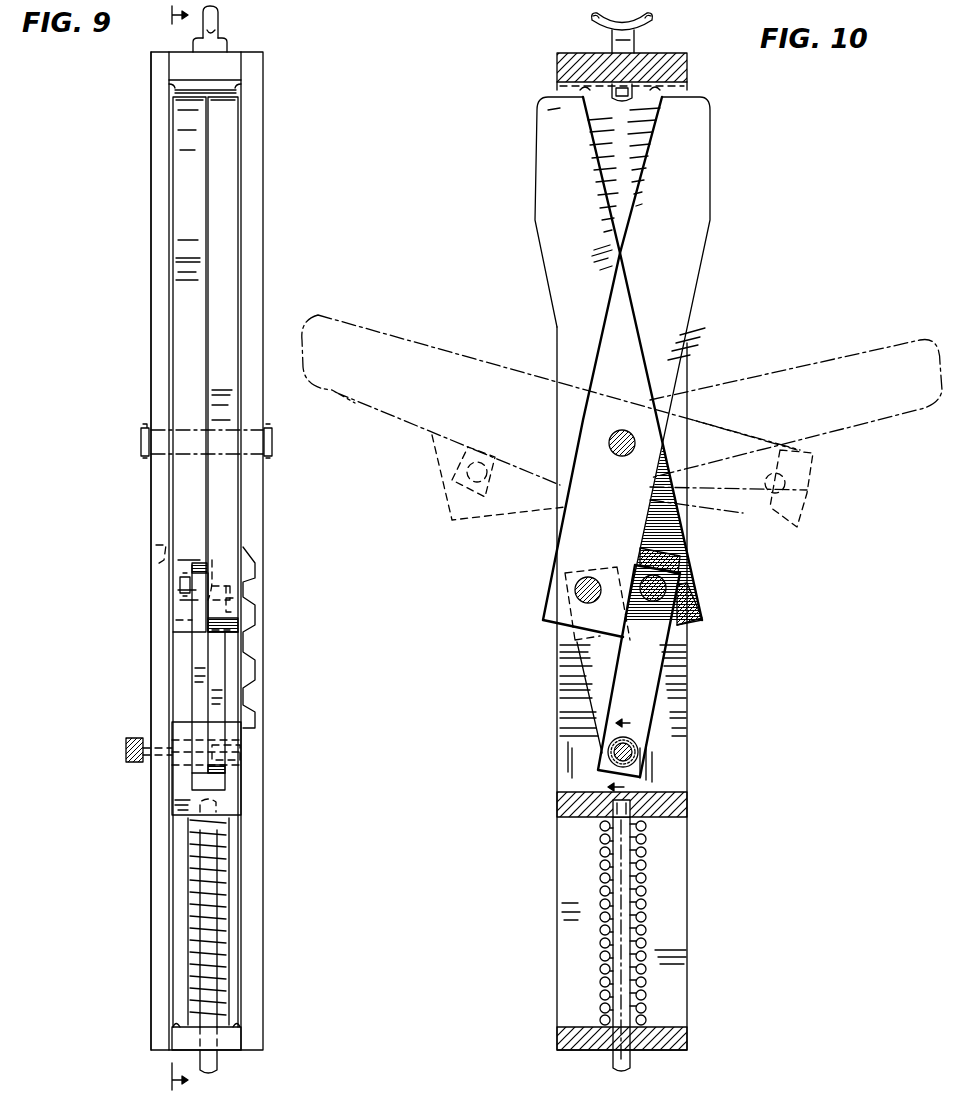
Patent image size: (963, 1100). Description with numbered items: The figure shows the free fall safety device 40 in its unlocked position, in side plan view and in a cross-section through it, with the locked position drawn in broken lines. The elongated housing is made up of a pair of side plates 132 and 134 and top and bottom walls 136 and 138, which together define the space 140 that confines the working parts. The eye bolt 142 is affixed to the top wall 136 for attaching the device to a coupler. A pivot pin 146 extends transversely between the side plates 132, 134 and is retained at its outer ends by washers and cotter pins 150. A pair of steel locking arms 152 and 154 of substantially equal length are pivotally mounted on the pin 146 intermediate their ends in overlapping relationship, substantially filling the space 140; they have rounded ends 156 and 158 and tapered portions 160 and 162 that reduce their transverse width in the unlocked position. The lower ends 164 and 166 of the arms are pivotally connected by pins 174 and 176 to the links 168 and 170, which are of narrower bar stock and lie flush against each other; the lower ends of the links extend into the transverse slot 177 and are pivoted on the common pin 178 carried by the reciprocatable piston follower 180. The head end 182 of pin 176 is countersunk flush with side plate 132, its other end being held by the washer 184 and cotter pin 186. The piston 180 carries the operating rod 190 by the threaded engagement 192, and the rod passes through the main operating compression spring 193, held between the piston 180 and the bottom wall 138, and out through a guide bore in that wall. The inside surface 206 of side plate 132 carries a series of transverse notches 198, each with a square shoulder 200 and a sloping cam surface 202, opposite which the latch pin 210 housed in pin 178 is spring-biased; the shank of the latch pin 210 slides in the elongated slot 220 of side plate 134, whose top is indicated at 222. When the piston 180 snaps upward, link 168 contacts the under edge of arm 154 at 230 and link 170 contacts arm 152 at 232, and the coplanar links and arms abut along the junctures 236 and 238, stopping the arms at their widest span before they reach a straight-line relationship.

In FIG. 9, the safety device 40 is at (265, 928).
In FIG. 9, the side plate 132 is at (255, 182).
In FIG. 10, the side plate 132 is at (690, 90).
In FIG. 9, the side plate 134 is at (160, 213).
In FIG. 9, the top wall 136 is at (180, 68).
In FIG. 10, the top wall 136 is at (680, 74).
In FIG. 9, the bottom wall 138 is at (238, 1045).
In FIG. 10, the bottom wall 138 is at (680, 1045).
In FIG. 9, the space 140 is at (232, 90).
In FIG. 9, the eye bolt 142 is at (220, 24).
In FIG. 10, the eye bolt 142 is at (650, 30).
In FIG. 9, the pivot pin 146 is at (268, 432).
In FIG. 10, the pivot pin 146 is at (624, 430).
In FIG. 9, the cotter pin 150 is at (147, 432).
In FIG. 9, the locking arm 152 is at (183, 262).
In FIG. 10, the locking arm 152 is at (700, 262).
In FIG. 9, the locking arm 154 is at (228, 246).
In FIG. 10, the locking arm 154 is at (550, 278).
In FIG. 10, the rounded end 156 is at (700, 103).
In FIG. 10, the rounded end 158 is at (558, 97).
In FIG. 10, the tapered portion 160 is at (710, 165).
In FIG. 10, the tapered portion 162 is at (537, 155).
In FIG. 10, the lower end 164 is at (558, 548).
In FIG. 10, the lower end 166 is at (690, 565).
In FIG. 9, the link 168 is at (222, 690).
In FIG. 10, the link 168 is at (582, 672).
In FIG. 9, the link 170 is at (193, 672).
In FIG. 10, the link 170 is at (798, 512).
In FIG. 10, the pin 174 is at (575, 596).
In FIG. 9, the pin 176 is at (215, 570).
In FIG. 10, the pin 176 is at (700, 592).
In FIG. 10, the transverse slot 177 is at (680, 745).
In FIG. 10, the pin 178 is at (665, 540).
In FIG. 9, the piston follower 180 is at (228, 797).
In FIG. 10, the piston follower 180 is at (656, 802).
In FIG. 9, the enlarged head end 182 is at (248, 590).
In FIG. 9, the washer 184 is at (192, 565).
In FIG. 9, the cotter pin 186 is at (184, 578).
In FIG. 9, the operating rod 190 is at (217, 1062).
In FIG. 10, the operating rod 190 is at (630, 1062).
In FIG. 10, the threaded engagement 192 is at (630, 818).
In FIG. 9, the main operating compression spring 193 is at (222, 870).
In FIG. 10, the main operating compression spring 193 is at (645, 897).
In FIG. 9, the transverse notches 198 is at (248, 645).
In FIG. 10, the transverse notches 198 is at (680, 710).
In FIG. 9, the square shoulder 200 is at (248, 665).
In FIG. 9, the cam surface 202 is at (247, 556).
In FIG. 10, the inside surface 206 is at (580, 872).
In FIG. 10, the latch pin 210 is at (603, 755).
In FIG. 9, the elongated slot 220 is at (162, 655).
In FIG. 9, the top of slot 222 is at (158, 562).
In FIG. 10, the contact point 230 is at (478, 447).
In FIG. 10, the contact point 232 is at (790, 445).
In FIG. 10, the juncture 236 is at (560, 655).
In FIG. 10, the juncture 238 is at (640, 622).